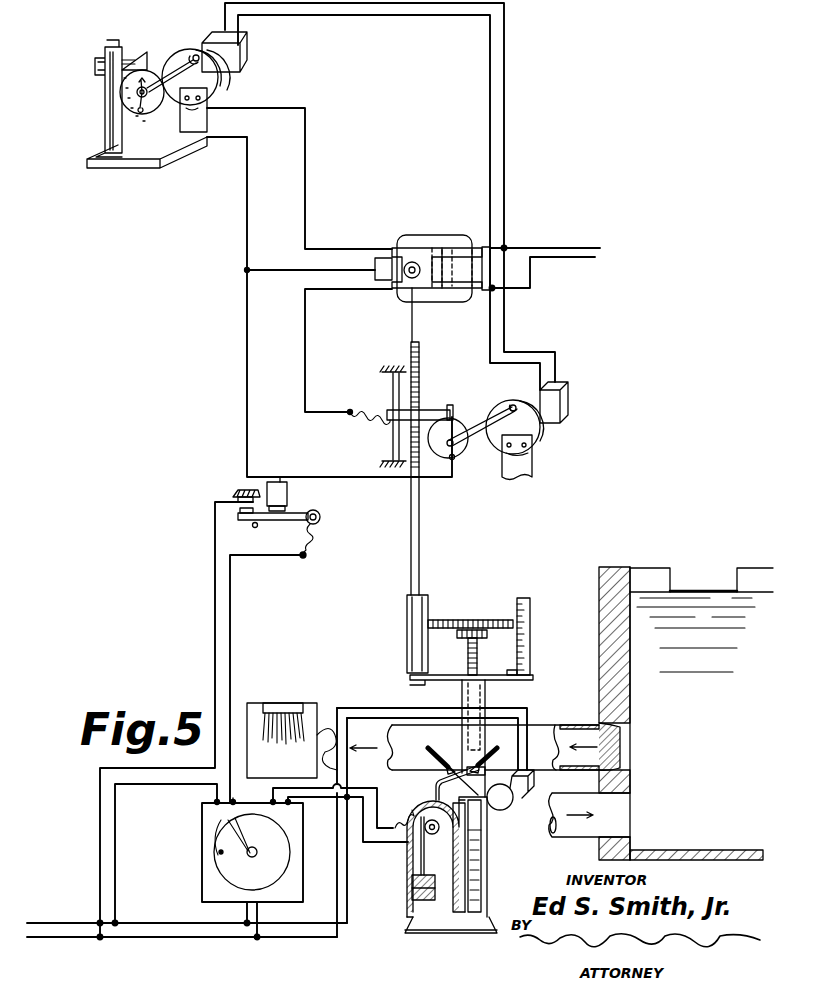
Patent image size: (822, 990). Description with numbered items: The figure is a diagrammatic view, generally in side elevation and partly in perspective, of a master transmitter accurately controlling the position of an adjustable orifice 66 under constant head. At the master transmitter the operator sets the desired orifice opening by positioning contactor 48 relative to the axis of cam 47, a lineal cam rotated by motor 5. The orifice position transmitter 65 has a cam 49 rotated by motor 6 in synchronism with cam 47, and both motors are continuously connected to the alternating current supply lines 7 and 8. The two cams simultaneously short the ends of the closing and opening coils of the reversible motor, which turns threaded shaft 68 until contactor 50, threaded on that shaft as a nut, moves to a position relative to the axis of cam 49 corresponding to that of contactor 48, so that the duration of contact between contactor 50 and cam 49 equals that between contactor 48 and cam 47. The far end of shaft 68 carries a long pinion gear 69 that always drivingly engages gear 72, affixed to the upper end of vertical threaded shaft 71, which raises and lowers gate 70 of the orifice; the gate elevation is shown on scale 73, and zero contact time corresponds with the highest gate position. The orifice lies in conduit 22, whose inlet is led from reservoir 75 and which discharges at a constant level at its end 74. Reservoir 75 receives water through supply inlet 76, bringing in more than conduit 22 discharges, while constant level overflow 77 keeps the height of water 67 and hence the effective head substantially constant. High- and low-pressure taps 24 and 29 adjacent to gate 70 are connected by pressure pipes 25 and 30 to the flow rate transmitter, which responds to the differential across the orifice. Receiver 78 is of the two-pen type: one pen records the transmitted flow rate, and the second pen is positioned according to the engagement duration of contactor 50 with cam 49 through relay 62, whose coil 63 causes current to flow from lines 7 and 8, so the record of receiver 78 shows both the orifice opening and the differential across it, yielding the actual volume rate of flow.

The contactor 48 is at (131, 60).
The cam 47 is at (147, 53).
The motor 5 is at (250, 50).
The A. C. current supply line 7 is at (553, 249).
The A. C. current supply line 8 is at (553, 258).
The threaded shaft 68 is at (419, 376).
The contactor 50 is at (430, 409).
The cam 49 is at (458, 417).
The motor 6 is at (559, 424).
The adjustable-orifice position transmitter 65 is at (549, 465).
The coil 63 is at (267, 489).
The relay 62 is at (232, 512).
The reservoir 75 is at (607, 567).
The constant level overflow 77 is at (702, 588).
The water 67 is at (701, 620).
The long pinion gear 69 is at (410, 603).
The gear 72 is at (437, 617).
The threaded shaft 71 is at (463, 648).
The scale 73 is at (531, 603).
The adjustable orifice 66 is at (487, 725).
The gate 70 is at (463, 703).
The conduit 22 is at (544, 724).
The discharge end 74 is at (292, 703).
The low-pressure tap 29 is at (431, 748).
The high-pressure tap 24 is at (493, 751).
The pressure pipe 25 is at (431, 793).
The pressure pipe 30 is at (493, 800).
The supply inlet 76 is at (628, 808).
The receiver 78 is at (198, 843).